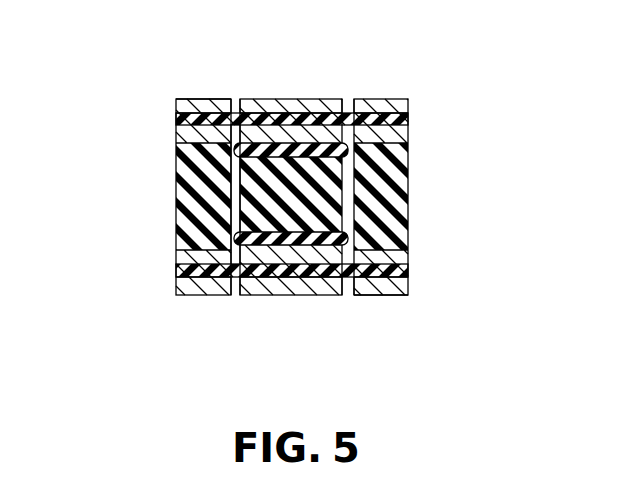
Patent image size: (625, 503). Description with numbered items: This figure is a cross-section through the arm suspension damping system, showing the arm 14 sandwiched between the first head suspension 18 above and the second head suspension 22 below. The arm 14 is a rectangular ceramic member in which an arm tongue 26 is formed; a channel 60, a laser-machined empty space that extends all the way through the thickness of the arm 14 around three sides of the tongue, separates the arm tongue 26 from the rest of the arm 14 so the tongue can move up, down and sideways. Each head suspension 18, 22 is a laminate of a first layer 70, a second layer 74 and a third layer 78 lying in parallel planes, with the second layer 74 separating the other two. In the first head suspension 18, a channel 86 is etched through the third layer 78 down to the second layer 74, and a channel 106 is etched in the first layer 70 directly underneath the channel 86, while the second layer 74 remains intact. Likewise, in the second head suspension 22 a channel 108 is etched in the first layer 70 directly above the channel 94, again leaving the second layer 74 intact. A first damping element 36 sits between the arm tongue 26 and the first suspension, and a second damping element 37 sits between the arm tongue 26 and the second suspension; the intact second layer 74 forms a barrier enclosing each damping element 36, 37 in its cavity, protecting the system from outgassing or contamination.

The arm 14 is at (170, 186).
The first head suspension 18 is at (188, 90).
The second head suspension 22 is at (405, 308).
The arm tongue 26 is at (232, 219).
The first damping element 36 is at (409, 171).
The second damping element 37 is at (352, 238).
The channel 60 is at (236, 186).
The first layer 70 is at (409, 137).
The second layer 74 is at (409, 118).
The third layer 78 is at (409, 106).
The channel 86 is at (237, 103).
The channel 94 is at (232, 297).
The channel 106 is at (176, 130).
The channel 108 is at (176, 264).